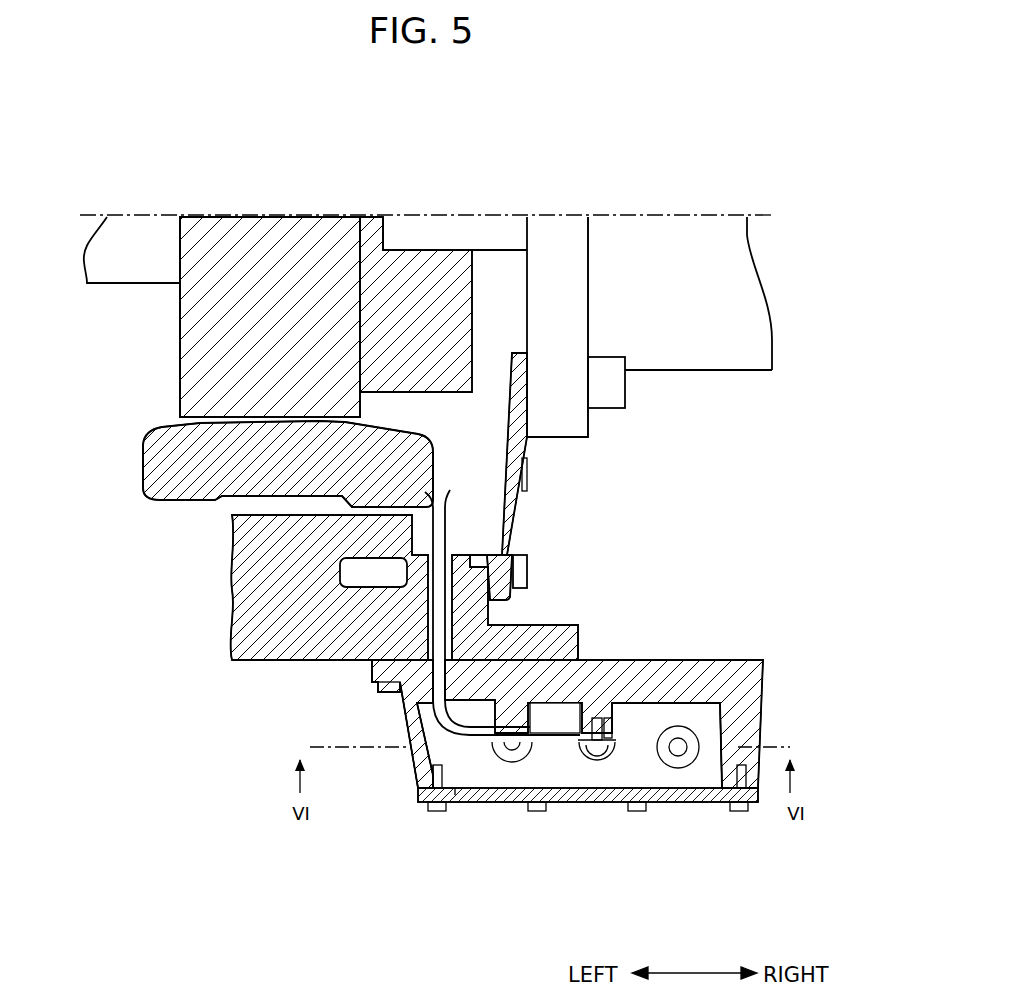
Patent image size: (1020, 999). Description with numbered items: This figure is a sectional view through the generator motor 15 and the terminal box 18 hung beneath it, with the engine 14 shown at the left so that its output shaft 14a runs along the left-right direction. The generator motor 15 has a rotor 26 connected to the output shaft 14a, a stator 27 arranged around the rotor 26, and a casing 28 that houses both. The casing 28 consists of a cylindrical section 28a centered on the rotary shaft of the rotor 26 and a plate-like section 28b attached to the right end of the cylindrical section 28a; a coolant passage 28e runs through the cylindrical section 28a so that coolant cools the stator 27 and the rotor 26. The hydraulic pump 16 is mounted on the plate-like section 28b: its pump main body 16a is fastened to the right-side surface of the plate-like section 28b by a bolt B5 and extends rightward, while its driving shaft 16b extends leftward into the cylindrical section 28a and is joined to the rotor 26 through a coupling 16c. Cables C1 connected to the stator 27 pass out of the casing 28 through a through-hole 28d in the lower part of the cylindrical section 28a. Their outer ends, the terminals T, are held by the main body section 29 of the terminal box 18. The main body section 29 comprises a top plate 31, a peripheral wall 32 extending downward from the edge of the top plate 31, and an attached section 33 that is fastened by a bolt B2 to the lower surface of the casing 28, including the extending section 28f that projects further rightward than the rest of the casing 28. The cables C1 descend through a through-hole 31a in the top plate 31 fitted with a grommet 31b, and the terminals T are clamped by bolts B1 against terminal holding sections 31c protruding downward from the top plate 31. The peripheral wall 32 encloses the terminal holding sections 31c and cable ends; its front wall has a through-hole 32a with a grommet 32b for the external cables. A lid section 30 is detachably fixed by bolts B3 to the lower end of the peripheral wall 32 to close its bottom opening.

The engine 14 is at (141, 184).
The output shaft 14a is at (148, 283).
The generator motor 15 is at (414, 184).
The hydraulic pump 16 is at (684, 184).
The pump main body 16a is at (620, 215).
The driving shaft 16b is at (491, 215).
The coupling 16c is at (457, 316).
The terminal box 18 is at (424, 900).
The rotor 26 is at (292, 215).
The stator 27 is at (178, 500).
The casing 28 is at (418, 506).
The cylindrical section 28a is at (470, 604).
The plate-like section 28b is at (512, 530).
The through-hole 28d is at (448, 548).
The coolant passage 28e is at (340, 574).
The extending section 28f is at (552, 632).
The main body section 29 is at (784, 712).
The lid section 30 is at (692, 803).
The top plate 31 is at (730, 675).
The through-hole 31a is at (402, 706).
The grommet 31b is at (410, 738).
The terminal holding section 31c is at (628, 733).
The peripheral wall 32 is at (534, 779).
The through-hole 32a is at (598, 745).
The grommet 32b is at (675, 740).
The attached section 33 is at (372, 674).
The bolt B1 is at (594, 764).
The bolt B2 is at (378, 688).
The bolt B3 is at (438, 812).
The bolt B5 is at (608, 387).
The cable C1 is at (442, 498).
The terminal T is at (572, 736).